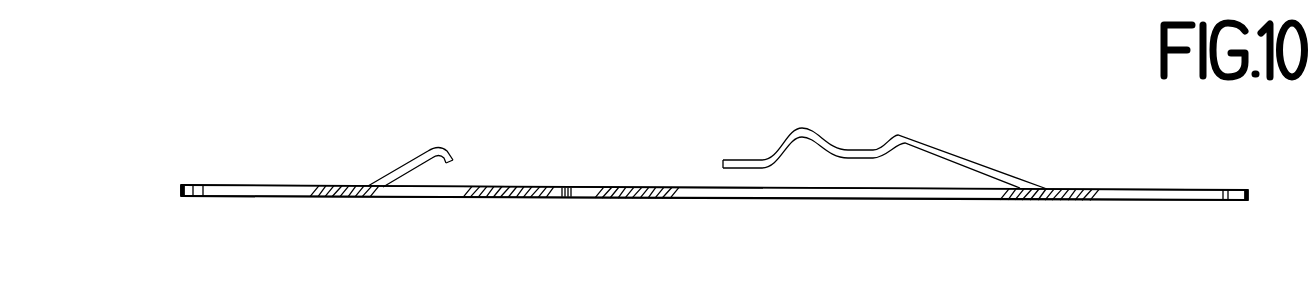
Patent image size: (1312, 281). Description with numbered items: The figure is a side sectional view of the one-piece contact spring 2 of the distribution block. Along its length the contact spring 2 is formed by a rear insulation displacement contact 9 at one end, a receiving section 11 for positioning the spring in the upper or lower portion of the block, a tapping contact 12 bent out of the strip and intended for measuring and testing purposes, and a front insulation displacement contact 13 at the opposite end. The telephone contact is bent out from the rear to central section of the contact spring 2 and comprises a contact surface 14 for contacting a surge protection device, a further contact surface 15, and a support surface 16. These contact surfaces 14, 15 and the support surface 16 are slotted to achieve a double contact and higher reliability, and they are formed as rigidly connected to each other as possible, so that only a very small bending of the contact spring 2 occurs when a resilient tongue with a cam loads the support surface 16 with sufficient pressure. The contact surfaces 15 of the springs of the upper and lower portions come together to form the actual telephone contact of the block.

The contact spring 2 is at (1081, 149).
The rear insulation displacement contact 9 is at (1188, 190).
The receiving section 11 is at (603, 187).
The tapping contact 12 is at (423, 153).
The front insulation displacement contact 13 is at (216, 185).
The contact surface 14 is at (905, 138).
The contact surface 15 is at (803, 129).
The support surface 16 is at (742, 161).